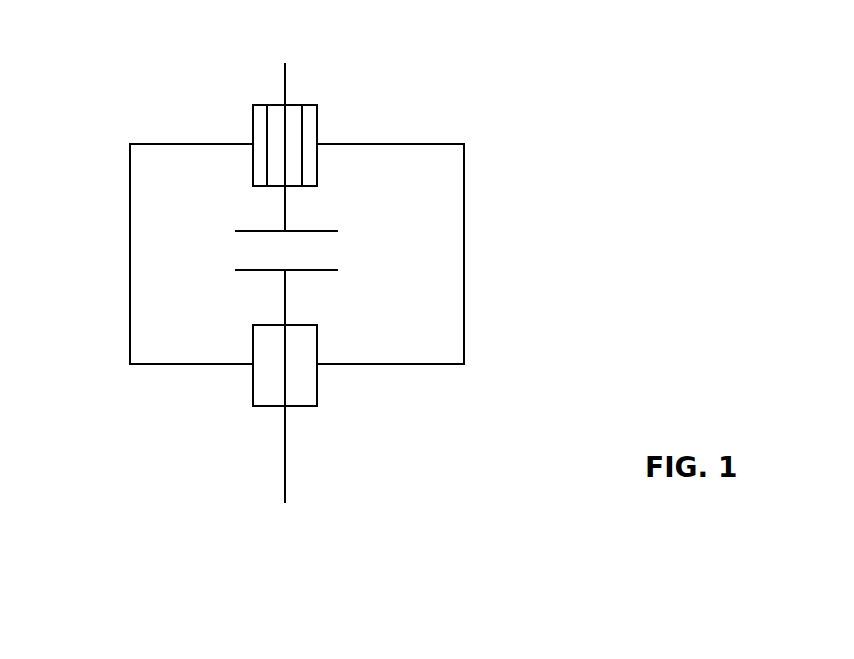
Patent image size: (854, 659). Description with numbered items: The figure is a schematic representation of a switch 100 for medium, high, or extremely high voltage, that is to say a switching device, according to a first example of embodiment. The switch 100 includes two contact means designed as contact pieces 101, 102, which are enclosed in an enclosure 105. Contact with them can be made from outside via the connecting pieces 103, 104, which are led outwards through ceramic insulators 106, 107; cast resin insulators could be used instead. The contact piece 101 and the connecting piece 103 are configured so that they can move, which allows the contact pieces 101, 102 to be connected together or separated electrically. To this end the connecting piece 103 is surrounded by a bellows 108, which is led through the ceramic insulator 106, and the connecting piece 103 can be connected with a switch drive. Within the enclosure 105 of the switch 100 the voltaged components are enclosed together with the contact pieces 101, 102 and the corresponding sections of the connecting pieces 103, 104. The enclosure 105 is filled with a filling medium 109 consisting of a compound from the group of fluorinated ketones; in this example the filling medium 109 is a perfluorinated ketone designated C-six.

The switch 100 is at (455, 98).
The contact piece 101 is at (313, 231).
The contact piece 102 is at (253, 274).
The connecting piece 103 is at (285, 71).
The connecting piece 104 is at (285, 482).
The enclosure 105 is at (464, 228).
The ceramic insulator 106 is at (317, 127).
The ceramic insulator 107 is at (253, 379).
The bellows 108 is at (265, 147).
The filling medium 109 is at (442, 312).